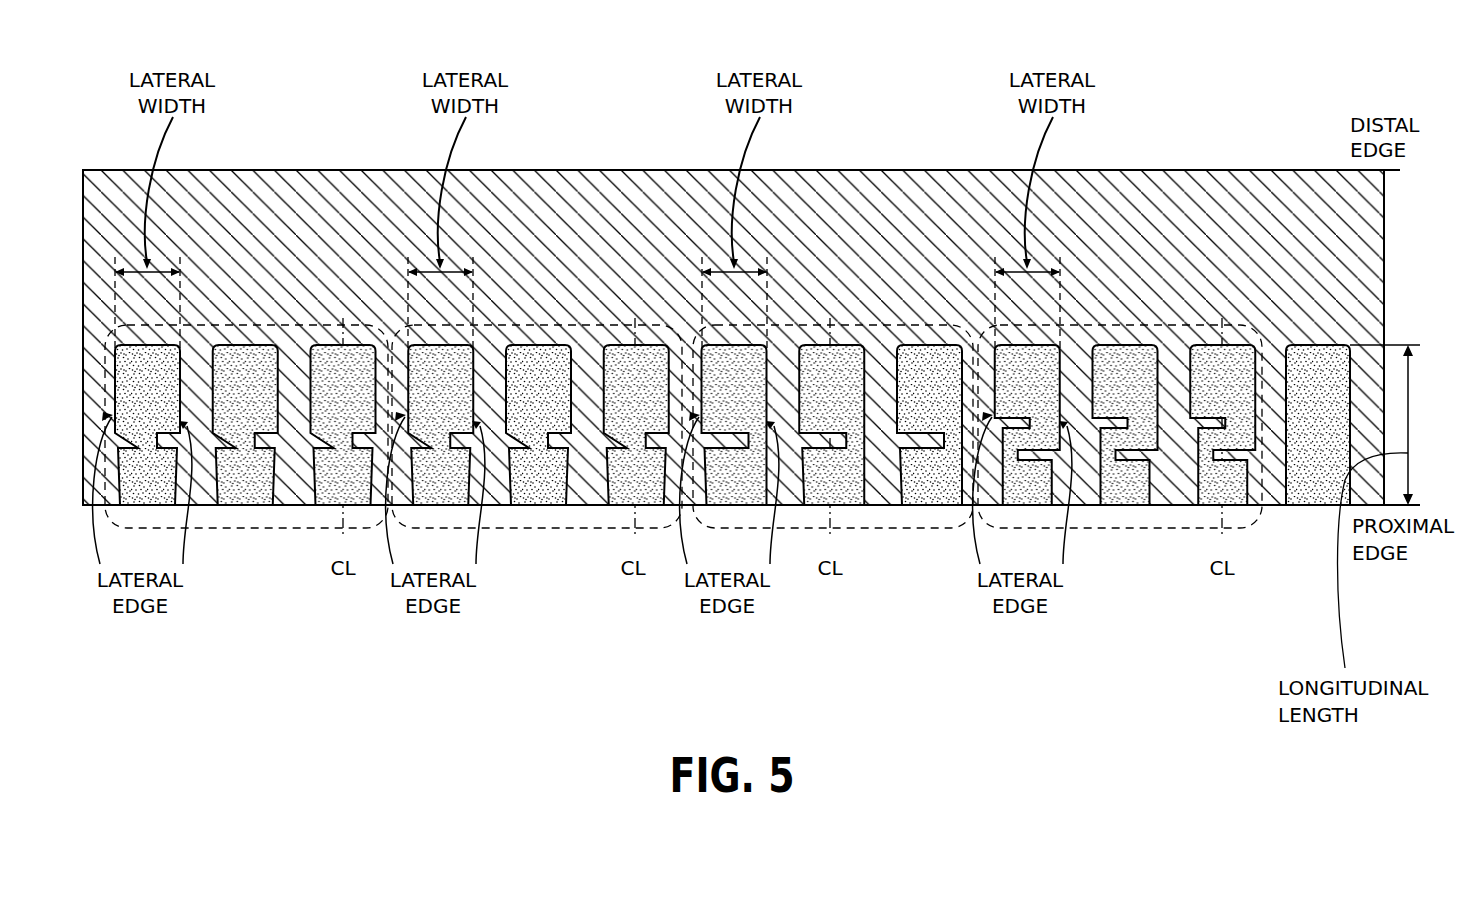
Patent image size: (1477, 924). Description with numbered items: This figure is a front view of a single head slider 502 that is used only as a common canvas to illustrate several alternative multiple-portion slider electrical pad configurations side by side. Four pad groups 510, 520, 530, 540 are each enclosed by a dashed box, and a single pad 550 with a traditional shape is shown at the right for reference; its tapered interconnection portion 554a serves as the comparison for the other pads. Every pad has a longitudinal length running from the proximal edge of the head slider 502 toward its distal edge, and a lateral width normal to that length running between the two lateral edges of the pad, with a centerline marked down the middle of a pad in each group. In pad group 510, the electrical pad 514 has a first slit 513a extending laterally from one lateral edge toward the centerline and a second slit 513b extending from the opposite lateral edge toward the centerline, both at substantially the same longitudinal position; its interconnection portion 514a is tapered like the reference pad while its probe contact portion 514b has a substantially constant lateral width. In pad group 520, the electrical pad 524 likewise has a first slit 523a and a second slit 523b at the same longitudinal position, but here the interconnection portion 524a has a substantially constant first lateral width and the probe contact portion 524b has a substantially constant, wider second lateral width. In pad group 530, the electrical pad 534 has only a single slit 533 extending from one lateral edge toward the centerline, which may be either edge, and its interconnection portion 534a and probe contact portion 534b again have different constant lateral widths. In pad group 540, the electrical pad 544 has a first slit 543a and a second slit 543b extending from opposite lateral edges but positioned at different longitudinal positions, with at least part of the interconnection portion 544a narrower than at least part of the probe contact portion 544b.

The head slider 502 is at (1182, 200).
The pad group 510 is at (297, 325).
The pad group 520 is at (556, 325).
The pad group 530 is at (858, 325).
The pad group 540 is at (1130, 325).
The single pad 550 is at (1305, 342).
The electrical pad 514 is at (230, 382).
The interconnection portion 514a is at (243, 487).
The probe contact portion 514b is at (236, 400).
The first slit 513a is at (228, 442).
The second slit 513b is at (258, 440).
The electrical pad 524 is at (523, 382).
The interconnection portion 524a is at (545, 487).
The probe contact portion 524b is at (530, 402).
The first slit 523a is at (513, 441).
The second slit 523b is at (565, 441).
The electrical pad 534 is at (915, 382).
The interconnection portion 534a is at (925, 487).
The probe contact portion 534b is at (915, 405).
The single slit 533 is at (900, 440).
The electrical pad 544 is at (1110, 382).
The interconnection portion 544a is at (1123, 490).
The probe contact portion 544b is at (1108, 405).
The first slit 543a is at (1100, 424).
The second slit 543b is at (1140, 455).
The interconnection portion 554a is at (1323, 500).